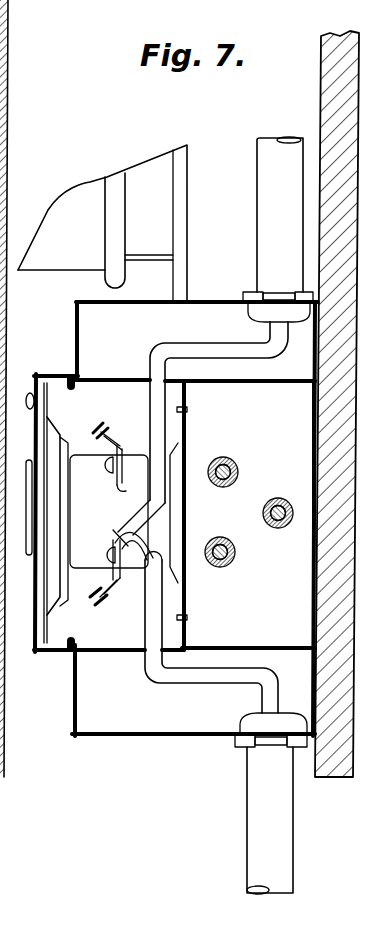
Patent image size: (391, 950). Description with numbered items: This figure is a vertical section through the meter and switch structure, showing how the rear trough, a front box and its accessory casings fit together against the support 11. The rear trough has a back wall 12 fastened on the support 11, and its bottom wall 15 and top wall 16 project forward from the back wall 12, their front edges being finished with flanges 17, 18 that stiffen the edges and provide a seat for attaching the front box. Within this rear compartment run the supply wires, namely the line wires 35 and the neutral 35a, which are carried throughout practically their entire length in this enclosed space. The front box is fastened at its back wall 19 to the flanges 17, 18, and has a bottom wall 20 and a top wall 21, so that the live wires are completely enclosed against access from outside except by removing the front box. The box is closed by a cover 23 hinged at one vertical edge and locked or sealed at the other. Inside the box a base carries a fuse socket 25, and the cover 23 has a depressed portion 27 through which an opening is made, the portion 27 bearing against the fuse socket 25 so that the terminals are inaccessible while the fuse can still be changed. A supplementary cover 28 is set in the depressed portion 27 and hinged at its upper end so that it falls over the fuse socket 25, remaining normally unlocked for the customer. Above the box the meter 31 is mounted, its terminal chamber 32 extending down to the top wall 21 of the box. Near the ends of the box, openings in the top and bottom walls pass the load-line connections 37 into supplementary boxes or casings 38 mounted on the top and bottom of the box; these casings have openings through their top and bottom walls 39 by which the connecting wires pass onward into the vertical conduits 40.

The support 11 is at (331, 82).
The back wall 12 is at (311, 560).
The bottom wall 15 is at (280, 625).
The top wall 16 is at (292, 381).
The flange 17 is at (188, 628).
The flange 18 is at (187, 404).
The back wall 19 is at (186, 517).
The bottom wall 20 is at (48, 646).
The top wall 21 is at (60, 390).
The cover 23 is at (40, 653).
The fuse socket 25 is at (109, 511).
The depressed portion 27 is at (45, 491).
The supplementary cover 28 is at (24, 562).
The meter 31 is at (102, 223).
The terminal chamber 32 is at (137, 289).
The line wires 35 is at (231, 447).
The neutral 35a is at (296, 468).
The connections 37 is at (166, 345).
The supplementary boxes or casings 38 is at (76, 332).
The top and bottom walls 39 is at (217, 301).
The vertical conduits 40 is at (276, 211).